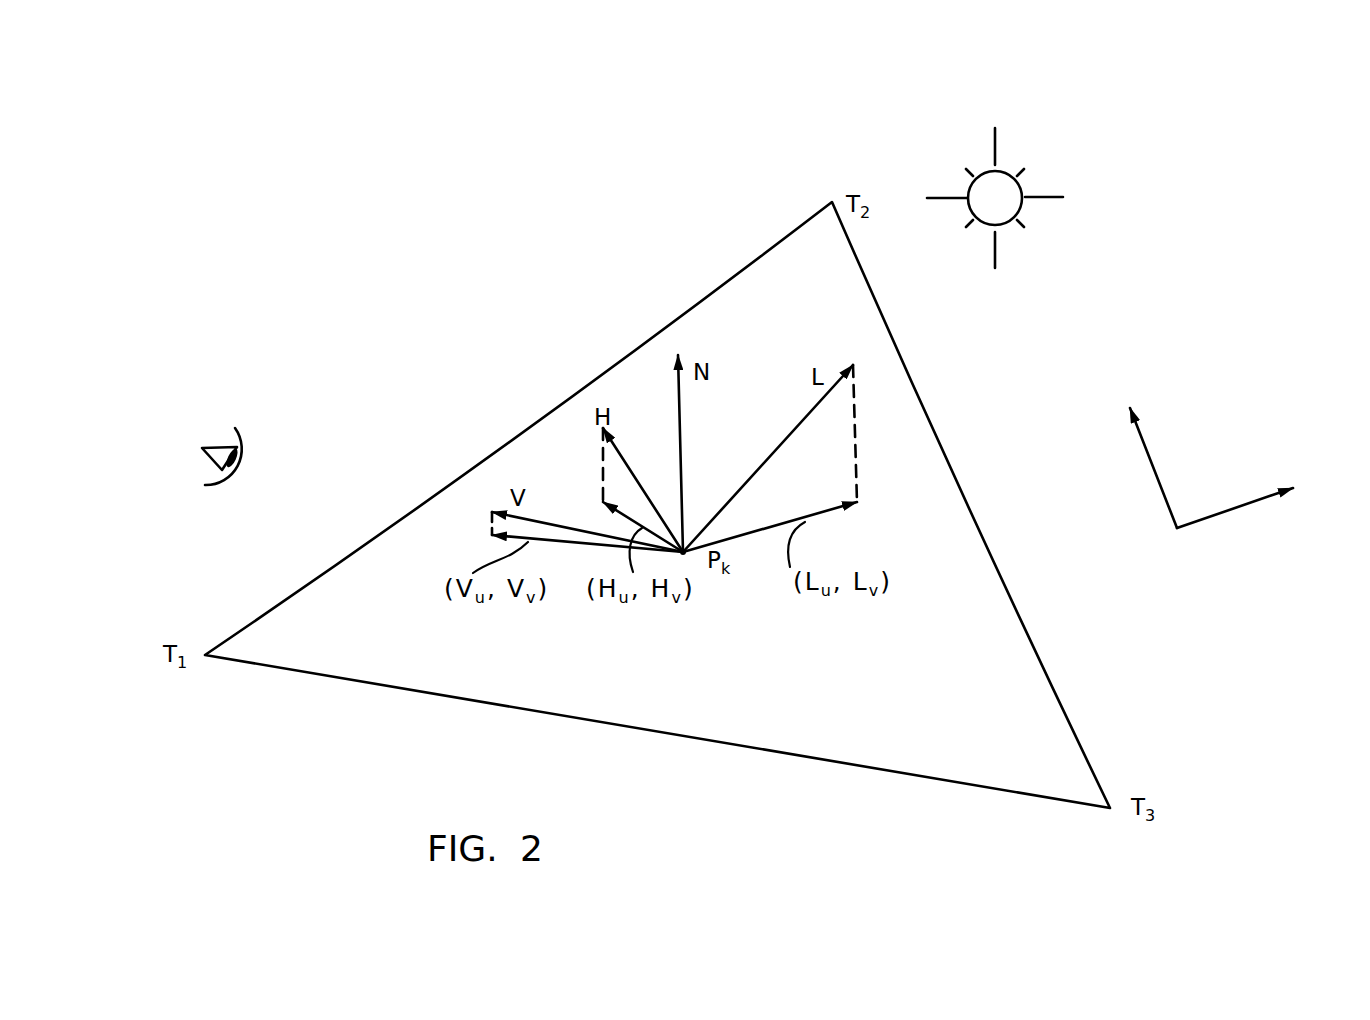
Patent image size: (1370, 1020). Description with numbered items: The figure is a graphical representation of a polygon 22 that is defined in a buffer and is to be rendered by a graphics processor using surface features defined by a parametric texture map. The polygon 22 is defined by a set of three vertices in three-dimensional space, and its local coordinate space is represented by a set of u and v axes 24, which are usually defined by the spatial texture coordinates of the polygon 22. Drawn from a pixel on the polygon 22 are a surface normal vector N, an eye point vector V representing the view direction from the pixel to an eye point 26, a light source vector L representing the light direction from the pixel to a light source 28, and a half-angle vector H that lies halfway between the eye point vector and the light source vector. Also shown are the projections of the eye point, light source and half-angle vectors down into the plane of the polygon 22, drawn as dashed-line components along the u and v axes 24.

The polygon 22 is at (897, 770).
The u and v axes 24 is at (1235, 510).
The eye point 26 is at (212, 433).
The light source 28 is at (1045, 136).